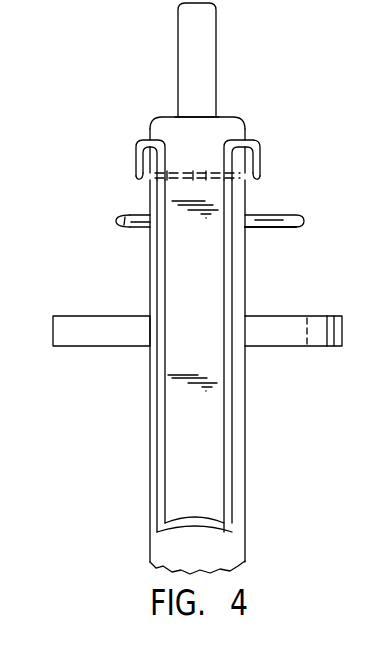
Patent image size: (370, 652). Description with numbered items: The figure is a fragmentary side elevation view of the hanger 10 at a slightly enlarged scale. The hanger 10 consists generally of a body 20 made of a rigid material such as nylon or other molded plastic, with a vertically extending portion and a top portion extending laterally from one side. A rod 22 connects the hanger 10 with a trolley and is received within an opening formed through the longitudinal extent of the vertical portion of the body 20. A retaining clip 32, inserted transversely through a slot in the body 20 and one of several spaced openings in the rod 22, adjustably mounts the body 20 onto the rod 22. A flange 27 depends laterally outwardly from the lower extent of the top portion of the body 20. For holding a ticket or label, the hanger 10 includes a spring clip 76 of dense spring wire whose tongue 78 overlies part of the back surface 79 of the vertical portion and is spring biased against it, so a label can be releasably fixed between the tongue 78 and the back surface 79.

The hanger 10 is at (277, 89).
The body 20 is at (150, 253).
The rod 22 is at (216, 58).
The flange 27 is at (73, 316).
The retaining clip 32 is at (283, 215).
The spring clip 76 is at (232, 253).
The tongue 78 is at (235, 411).
The back surface 79 is at (205, 465).